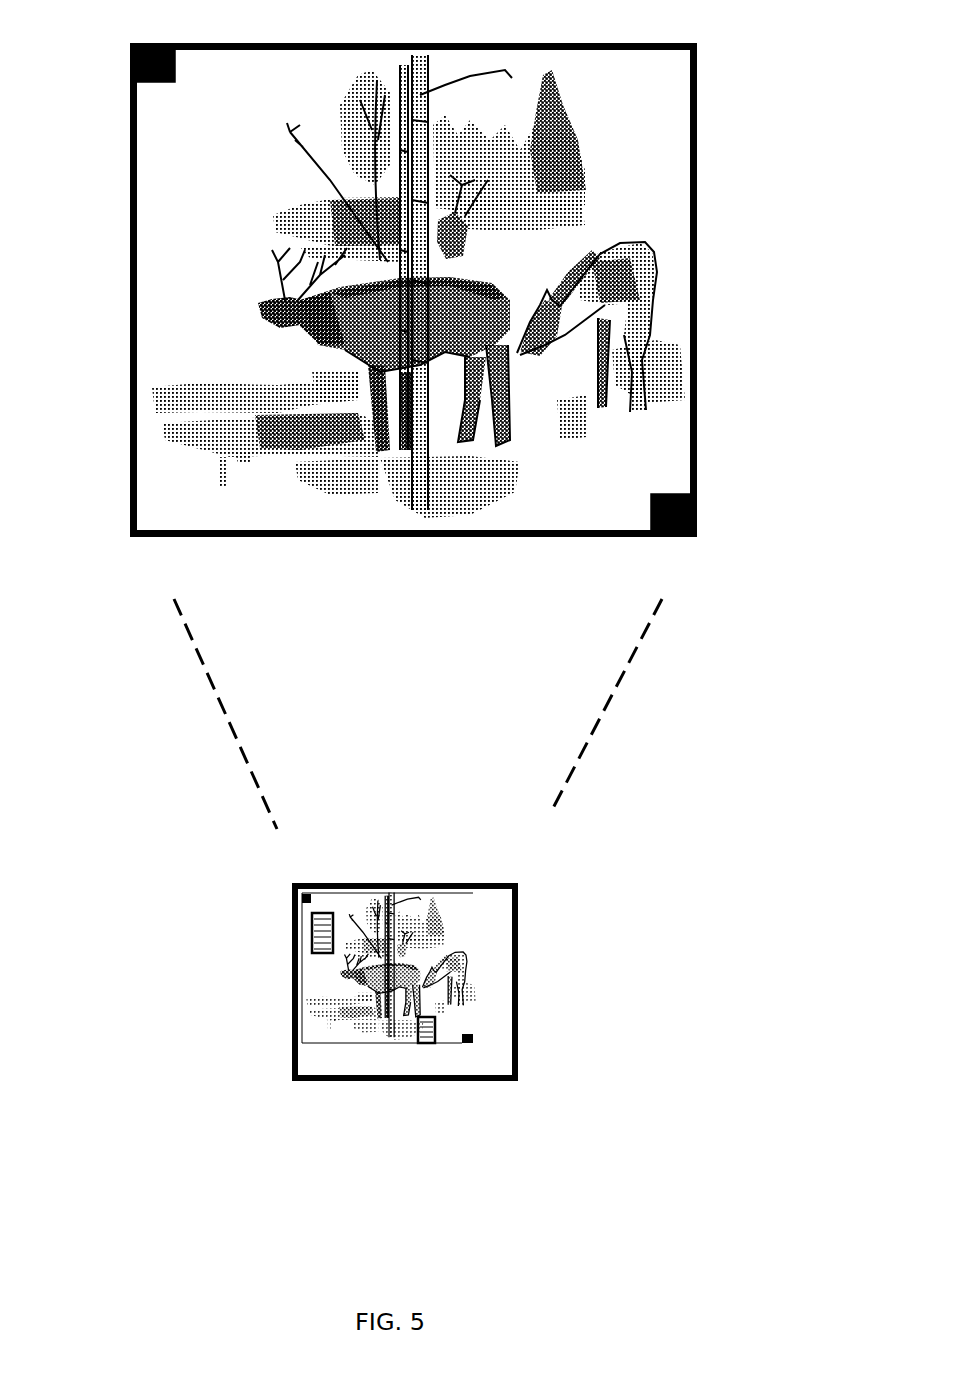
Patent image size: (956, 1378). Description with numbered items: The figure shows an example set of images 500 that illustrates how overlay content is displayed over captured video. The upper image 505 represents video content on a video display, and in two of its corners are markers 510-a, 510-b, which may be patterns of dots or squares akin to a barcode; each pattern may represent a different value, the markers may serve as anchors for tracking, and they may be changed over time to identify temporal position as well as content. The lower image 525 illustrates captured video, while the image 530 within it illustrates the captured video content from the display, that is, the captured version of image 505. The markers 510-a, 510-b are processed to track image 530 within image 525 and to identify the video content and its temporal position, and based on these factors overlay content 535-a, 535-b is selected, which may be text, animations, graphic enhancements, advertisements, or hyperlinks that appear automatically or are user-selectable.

The set of images 500 is at (426, 634).
The image 505 is at (131, 292).
The marker 510-a is at (131, 50).
The marker 510-b is at (697, 515).
The image 525 is at (293, 1074).
The image 530 is at (472, 953).
The overlay content 535-a is at (304, 909).
The overlay content 535-b is at (446, 1027).